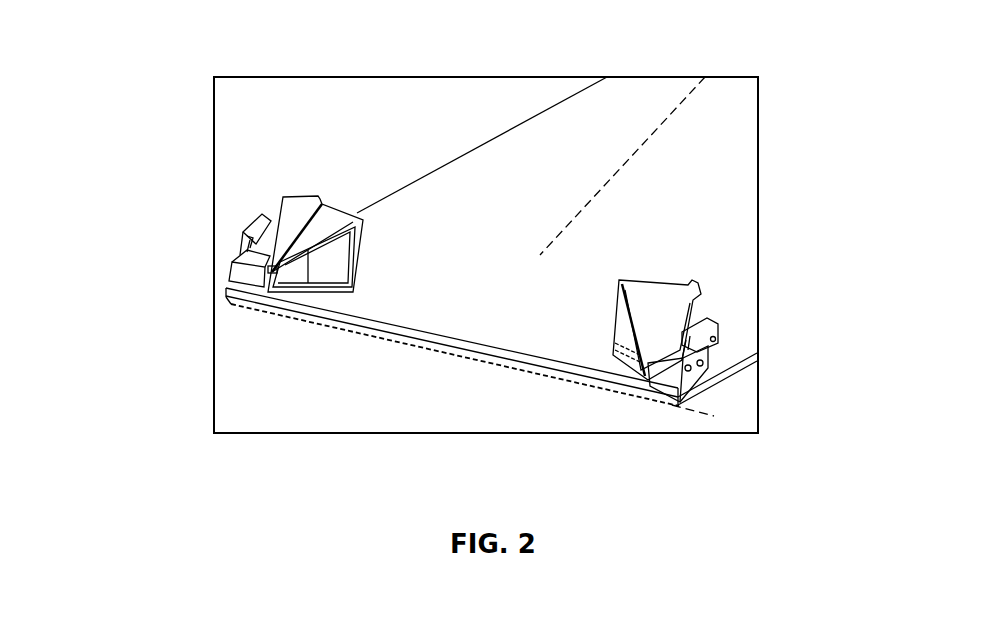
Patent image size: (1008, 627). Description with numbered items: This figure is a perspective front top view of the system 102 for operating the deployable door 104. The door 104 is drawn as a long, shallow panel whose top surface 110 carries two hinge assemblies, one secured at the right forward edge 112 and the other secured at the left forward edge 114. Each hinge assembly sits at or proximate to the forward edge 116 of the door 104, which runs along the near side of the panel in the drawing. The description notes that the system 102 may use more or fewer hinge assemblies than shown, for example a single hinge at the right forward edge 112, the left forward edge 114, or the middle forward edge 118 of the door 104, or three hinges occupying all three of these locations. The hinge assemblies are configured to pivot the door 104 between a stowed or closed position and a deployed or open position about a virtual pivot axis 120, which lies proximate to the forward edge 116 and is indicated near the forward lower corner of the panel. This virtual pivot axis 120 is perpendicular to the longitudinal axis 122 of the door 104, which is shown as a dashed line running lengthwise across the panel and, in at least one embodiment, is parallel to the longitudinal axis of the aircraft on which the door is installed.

The system 102 is at (178, 218).
The deployable door 104 is at (426, 332).
The top surface 110 is at (373, 300).
The right forward edge 112 is at (224, 290).
The left forward edge 114 is at (651, 397).
The forward edge 116 is at (477, 357).
The middle forward edge 118 is at (460, 342).
The virtual pivot axis 120 is at (690, 410).
The longitudinal axis 122 is at (673, 117).